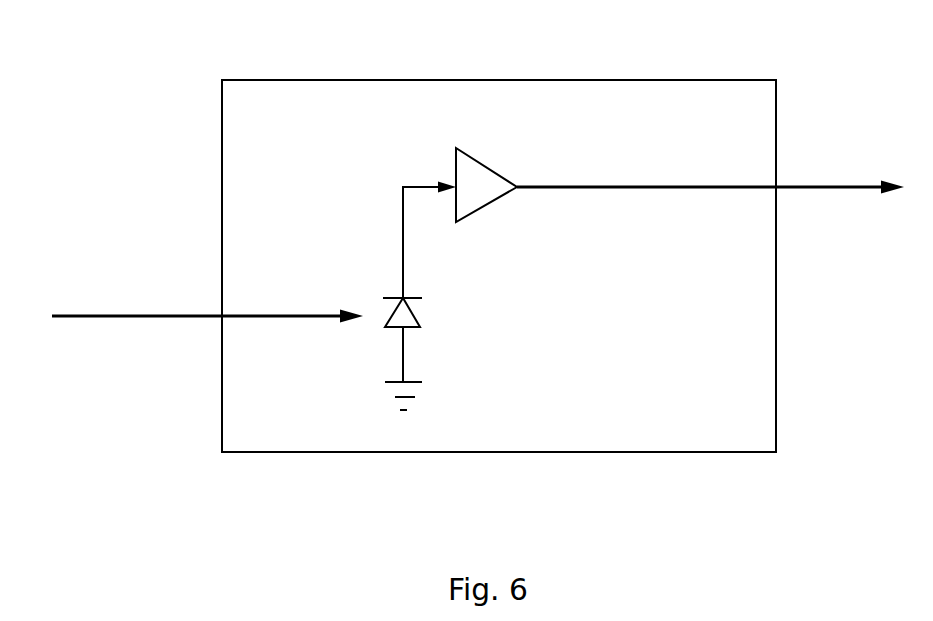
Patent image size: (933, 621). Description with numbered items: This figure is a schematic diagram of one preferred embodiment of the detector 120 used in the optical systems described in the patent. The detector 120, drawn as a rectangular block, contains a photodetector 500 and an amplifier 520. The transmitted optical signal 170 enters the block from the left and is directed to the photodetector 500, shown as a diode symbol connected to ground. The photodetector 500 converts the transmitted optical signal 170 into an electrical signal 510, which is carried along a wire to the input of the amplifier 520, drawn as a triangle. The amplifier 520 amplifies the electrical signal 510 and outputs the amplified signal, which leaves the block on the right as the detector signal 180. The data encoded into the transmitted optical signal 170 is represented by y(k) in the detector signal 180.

The detector 120 is at (497, 80).
The transmitted optical signal 170 is at (150, 316).
The detector signal 180 is at (804, 187).
The photodetector 500 is at (410, 328).
The electrical signal 510 is at (403, 270).
The amplifier 520 is at (485, 163).